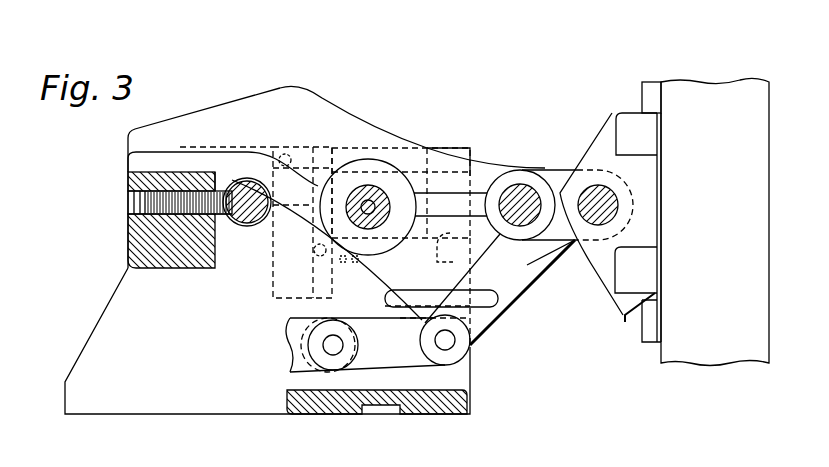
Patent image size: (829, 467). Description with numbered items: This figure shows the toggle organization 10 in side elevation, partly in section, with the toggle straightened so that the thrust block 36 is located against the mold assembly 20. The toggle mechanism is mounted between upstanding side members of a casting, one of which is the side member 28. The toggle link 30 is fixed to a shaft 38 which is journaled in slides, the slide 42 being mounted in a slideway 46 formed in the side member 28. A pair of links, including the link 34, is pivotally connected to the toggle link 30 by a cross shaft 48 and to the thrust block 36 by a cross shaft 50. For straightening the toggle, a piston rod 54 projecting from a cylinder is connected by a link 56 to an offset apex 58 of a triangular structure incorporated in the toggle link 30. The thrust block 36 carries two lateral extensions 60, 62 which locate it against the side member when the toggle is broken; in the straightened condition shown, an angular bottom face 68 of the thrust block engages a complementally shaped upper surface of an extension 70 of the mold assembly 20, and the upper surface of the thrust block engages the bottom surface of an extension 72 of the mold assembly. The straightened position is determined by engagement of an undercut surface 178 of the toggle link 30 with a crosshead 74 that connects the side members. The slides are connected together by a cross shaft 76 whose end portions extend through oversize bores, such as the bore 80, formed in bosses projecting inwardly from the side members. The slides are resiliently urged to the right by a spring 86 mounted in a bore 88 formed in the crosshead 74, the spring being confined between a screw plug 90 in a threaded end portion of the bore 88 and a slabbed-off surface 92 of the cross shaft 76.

The organization 10 is at (303, 67).
The mold assembly 20 is at (707, 50).
The side member 28 is at (102, 342).
The toggle link 30 is at (360, 128).
The link 34 is at (565, 177).
The thrust block 36 is at (602, 136).
The shaft 38 is at (369, 228).
The slide 42 is at (313, 230).
The slideway 46 is at (447, 237).
The cross shaft 48 is at (523, 195).
The cross shaft 50 is at (612, 217).
The piston rod 54 is at (297, 350).
The link 56 is at (400, 357).
The offset apex 58 is at (480, 336).
The lateral extension 60 is at (630, 120).
The lateral extension 62 is at (623, 273).
The angular bottom face 68 is at (630, 320).
The extension 70 is at (650, 328).
The extension 72 is at (658, 82).
The crosshead 74 is at (136, 244).
The cross shaft 76 is at (249, 212).
The oversize bore 80 is at (229, 224).
The spring 86 is at (186, 216).
The bore 88 is at (184, 172).
The screw plug 90 is at (128, 198).
The slabbed-off surface 92 is at (218, 182).
The undercut surface 178 is at (128, 170).